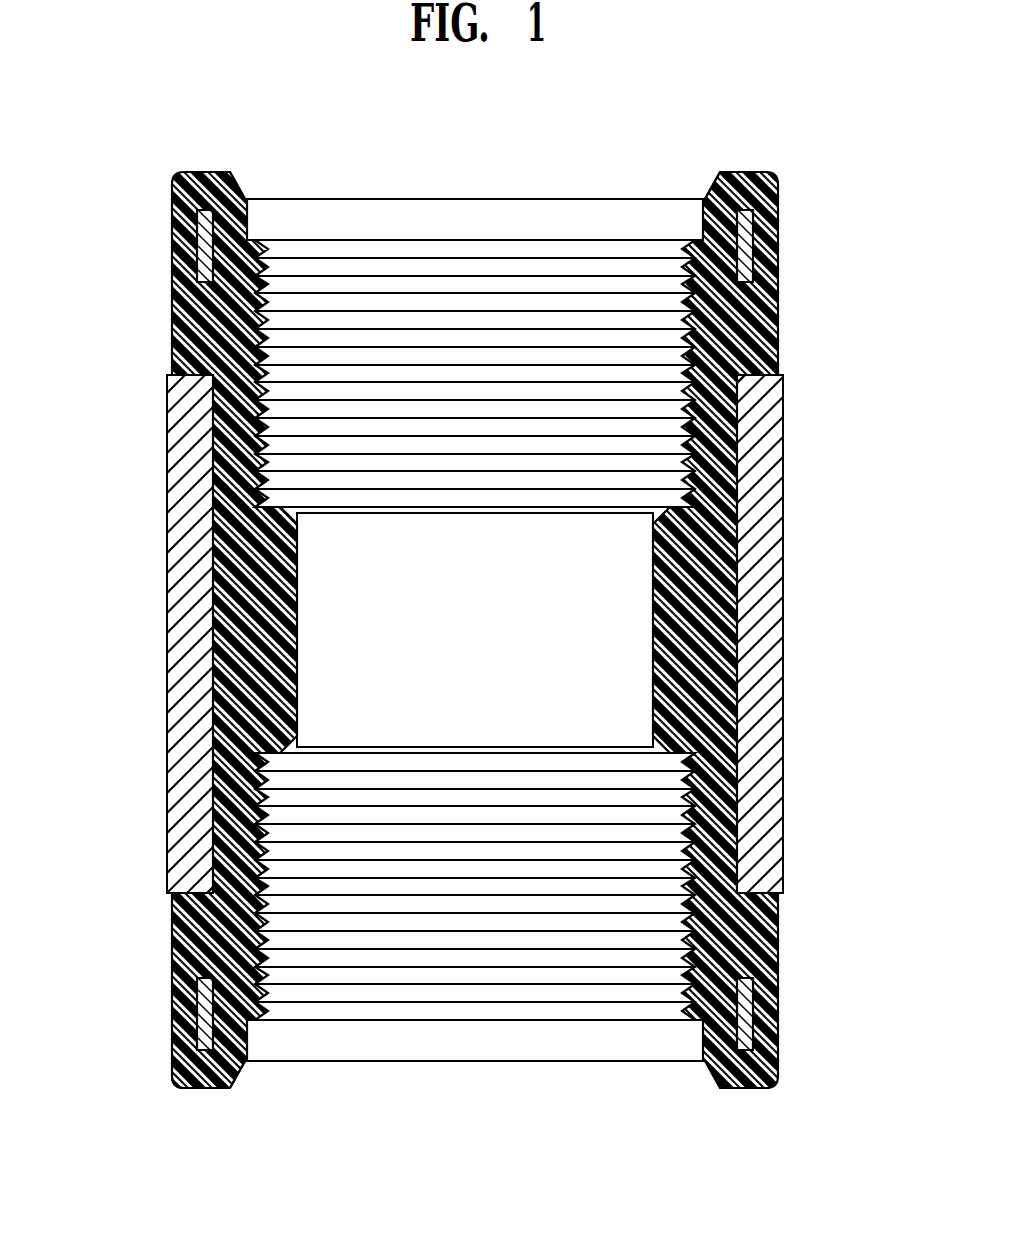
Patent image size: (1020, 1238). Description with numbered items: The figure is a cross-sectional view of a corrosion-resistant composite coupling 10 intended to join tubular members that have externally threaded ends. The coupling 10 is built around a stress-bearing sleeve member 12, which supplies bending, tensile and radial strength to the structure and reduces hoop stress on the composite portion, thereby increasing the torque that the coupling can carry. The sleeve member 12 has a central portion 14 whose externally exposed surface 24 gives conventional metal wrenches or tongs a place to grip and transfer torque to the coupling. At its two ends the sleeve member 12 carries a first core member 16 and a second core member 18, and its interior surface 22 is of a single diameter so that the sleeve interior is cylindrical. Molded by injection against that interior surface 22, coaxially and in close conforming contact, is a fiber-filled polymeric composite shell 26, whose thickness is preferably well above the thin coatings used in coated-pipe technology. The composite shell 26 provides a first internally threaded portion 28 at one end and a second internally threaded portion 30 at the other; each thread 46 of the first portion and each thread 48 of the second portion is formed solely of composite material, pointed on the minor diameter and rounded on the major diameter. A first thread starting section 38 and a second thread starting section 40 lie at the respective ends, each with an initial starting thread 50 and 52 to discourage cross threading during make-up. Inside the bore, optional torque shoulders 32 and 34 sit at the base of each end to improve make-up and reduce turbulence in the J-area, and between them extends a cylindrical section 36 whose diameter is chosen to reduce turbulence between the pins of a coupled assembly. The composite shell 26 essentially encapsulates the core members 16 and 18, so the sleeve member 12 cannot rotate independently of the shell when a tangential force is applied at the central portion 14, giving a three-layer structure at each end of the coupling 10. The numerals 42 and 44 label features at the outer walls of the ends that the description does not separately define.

The corrosion-resistant composite coupling 10 is at (797, 205).
The stress-bearing sleeve member 12 is at (786, 455).
The central portion 14 is at (785, 712).
The first core member 16 is at (174, 228).
The second core member 18 is at (190, 1004).
The interior surface 22 is at (218, 558).
The externally exposed surface 24 is at (166, 644).
The fiber-filled polymeric composite shell 26 is at (746, 603).
The first internally threaded portion 28 is at (272, 343).
The second internally threaded portion 30 is at (196, 912).
The first torque shoulder 32 is at (283, 515).
The second torque shoulder 34 is at (668, 757).
The cylindrical section 36 is at (462, 637).
The first thread starting section 38 is at (238, 226).
The second thread starting section 40 is at (240, 1012).
The upper outer wall 42 is at (777, 284).
The lower outer wall 44 is at (778, 976).
The thread of first internally threaded portion 46 is at (716, 320).
The thread of second internally threaded portion 48 is at (715, 905).
The initial starting thread 50 is at (700, 262).
The initial starting thread 52 is at (262, 1008).